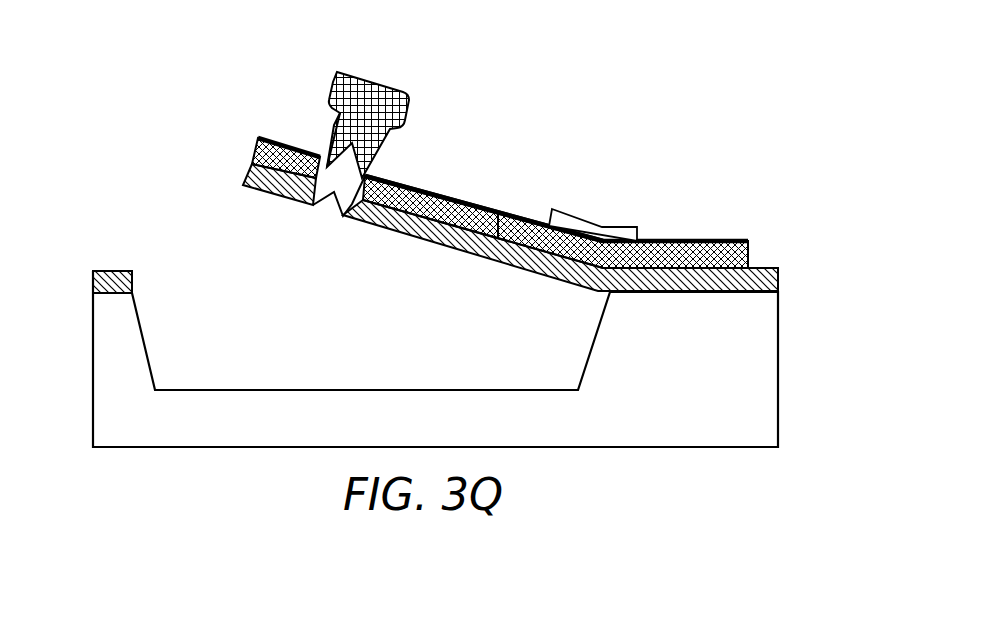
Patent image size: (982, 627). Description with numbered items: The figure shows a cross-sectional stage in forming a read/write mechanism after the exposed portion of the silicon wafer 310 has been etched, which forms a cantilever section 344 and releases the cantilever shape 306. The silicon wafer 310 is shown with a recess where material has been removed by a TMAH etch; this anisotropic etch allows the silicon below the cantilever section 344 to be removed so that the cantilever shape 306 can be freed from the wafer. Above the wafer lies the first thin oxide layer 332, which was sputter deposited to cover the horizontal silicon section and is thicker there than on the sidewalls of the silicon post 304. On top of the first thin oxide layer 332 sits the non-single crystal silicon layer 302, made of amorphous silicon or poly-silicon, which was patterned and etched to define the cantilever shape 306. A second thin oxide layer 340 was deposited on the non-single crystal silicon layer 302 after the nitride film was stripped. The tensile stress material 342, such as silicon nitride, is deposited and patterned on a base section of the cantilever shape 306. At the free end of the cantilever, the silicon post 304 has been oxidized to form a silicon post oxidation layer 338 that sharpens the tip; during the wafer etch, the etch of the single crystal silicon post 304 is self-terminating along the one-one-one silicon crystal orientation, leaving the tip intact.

The non-single crystal silicon layer 302 is at (503, 213).
The silicon post 304 is at (333, 132).
The cantilever shape 306 is at (697, 247).
The silicon wafer 310 is at (778, 356).
The first thin oxide layer 332 is at (778, 280).
The silicon post oxidation layer 338 is at (410, 107).
The second thin oxide layer 340 is at (440, 195).
The tensile stress material 342 is at (588, 220).
The cantilever section 344 is at (240, 141).